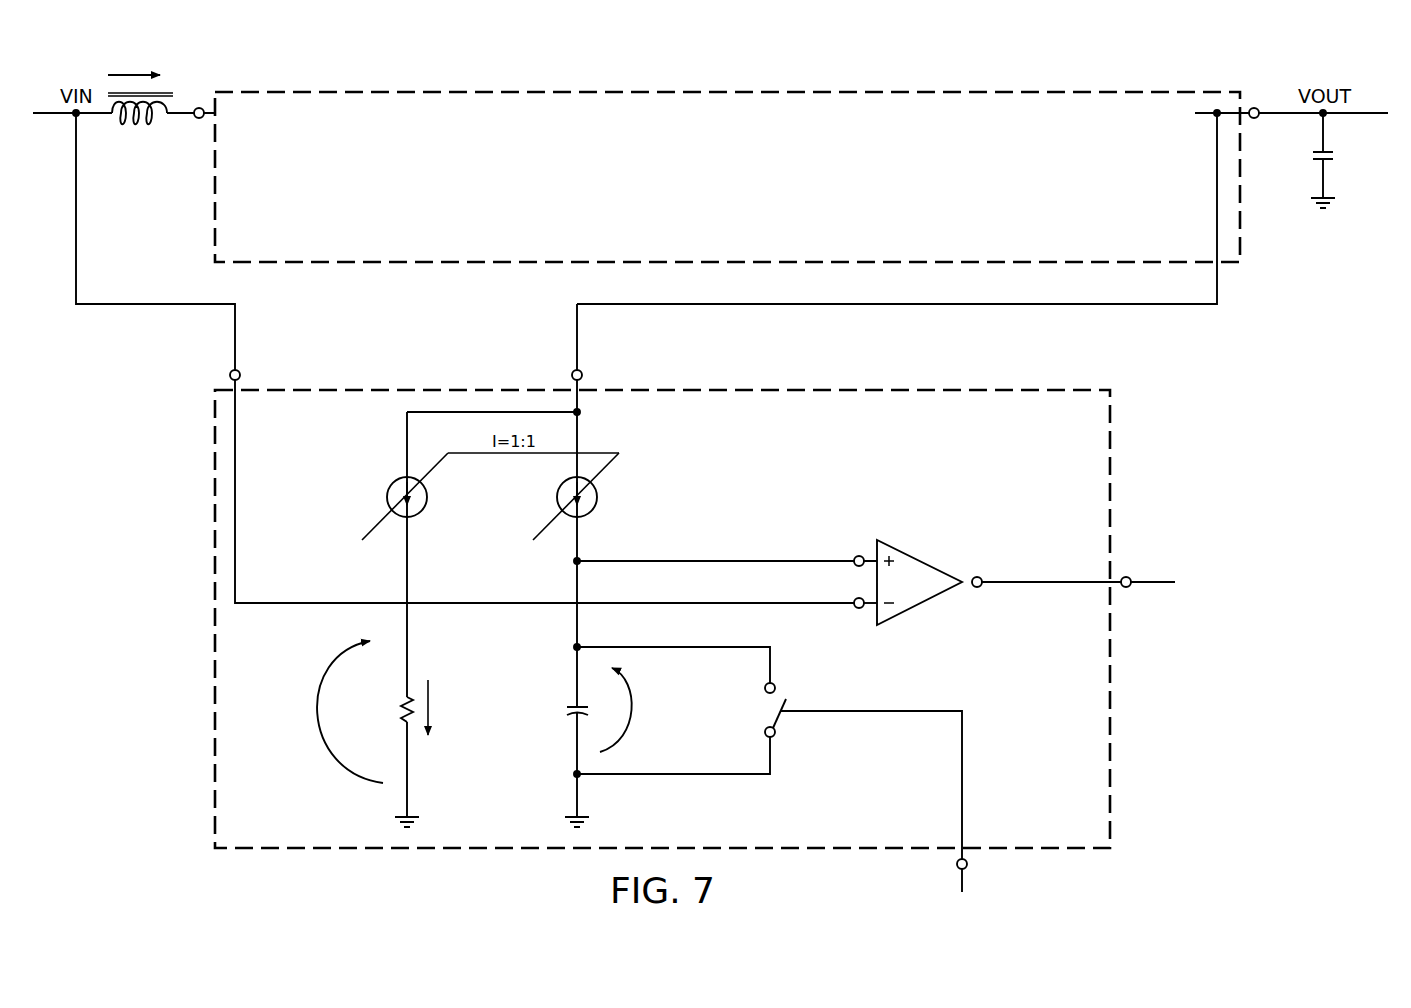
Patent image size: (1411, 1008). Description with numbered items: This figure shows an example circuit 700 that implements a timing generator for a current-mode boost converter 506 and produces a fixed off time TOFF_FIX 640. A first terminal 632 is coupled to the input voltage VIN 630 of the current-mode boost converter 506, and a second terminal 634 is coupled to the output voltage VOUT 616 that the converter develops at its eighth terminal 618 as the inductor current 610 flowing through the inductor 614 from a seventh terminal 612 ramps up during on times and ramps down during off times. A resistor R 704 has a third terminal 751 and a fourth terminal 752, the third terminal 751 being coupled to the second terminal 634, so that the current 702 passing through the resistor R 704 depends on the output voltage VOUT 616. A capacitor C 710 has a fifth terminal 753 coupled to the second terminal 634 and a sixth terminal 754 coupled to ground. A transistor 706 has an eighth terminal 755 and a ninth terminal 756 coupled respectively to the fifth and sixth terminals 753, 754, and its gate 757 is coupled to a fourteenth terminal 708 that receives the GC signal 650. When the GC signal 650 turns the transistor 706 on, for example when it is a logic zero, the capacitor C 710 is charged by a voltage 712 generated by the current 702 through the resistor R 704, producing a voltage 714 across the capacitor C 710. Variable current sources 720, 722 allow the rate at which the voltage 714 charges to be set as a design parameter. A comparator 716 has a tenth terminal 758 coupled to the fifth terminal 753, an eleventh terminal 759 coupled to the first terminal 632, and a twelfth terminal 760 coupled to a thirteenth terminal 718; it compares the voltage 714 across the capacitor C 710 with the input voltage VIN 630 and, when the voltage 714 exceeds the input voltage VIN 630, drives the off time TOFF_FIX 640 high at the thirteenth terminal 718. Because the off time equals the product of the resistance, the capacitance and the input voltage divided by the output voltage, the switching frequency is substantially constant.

The current-mode boost converter 506 is at (503, 90).
The inductor current 610 is at (137, 76).
The seventh terminal 612 is at (196, 119).
The inductor L1 614 is at (132, 122).
The output voltage VOUT 616 is at (1219, 285).
The eighth terminal 618 is at (1257, 119).
The first terminal 632 is at (1336, 155).
The input voltage VIN 630 is at (238, 330).
The second terminal 634 is at (583, 372).
The off time TOFF_FIX 640 is at (1150, 580).
The GC signal 650 is at (964, 875).
The circuit 700 is at (205, 690).
The current 702 is at (430, 705).
The resistor R 704 is at (402, 708).
The transistor MN1 706 is at (778, 722).
The fourteenth terminal 708 is at (957, 868).
The capacitor C 710 is at (565, 710).
The voltage 712 is at (304, 708).
The voltage 714 is at (627, 718).
The comparator 716 is at (920, 604).
The thirteenth terminal 718 is at (1129, 588).
The variable current source 720 is at (386, 497).
The variable current source 722 is at (598, 500).
The third terminal 751 is at (408, 651).
The fourth terminal 752 is at (408, 778).
The fifth terminal 753 is at (573, 675).
The sixth terminal 754 is at (573, 762).
The eighth terminal 755 is at (762, 666).
The ninth terminal 756 is at (767, 757).
The gate 757 is at (758, 712).
The tenth terminal 758 is at (855, 556).
The eleventh terminal 759 is at (856, 609).
The twelfth terminal 760 is at (979, 588).